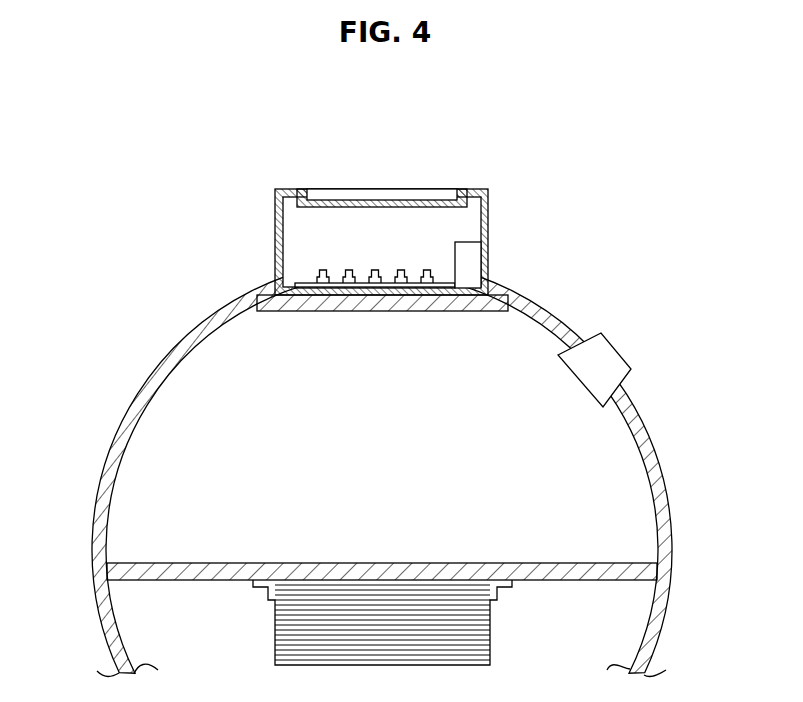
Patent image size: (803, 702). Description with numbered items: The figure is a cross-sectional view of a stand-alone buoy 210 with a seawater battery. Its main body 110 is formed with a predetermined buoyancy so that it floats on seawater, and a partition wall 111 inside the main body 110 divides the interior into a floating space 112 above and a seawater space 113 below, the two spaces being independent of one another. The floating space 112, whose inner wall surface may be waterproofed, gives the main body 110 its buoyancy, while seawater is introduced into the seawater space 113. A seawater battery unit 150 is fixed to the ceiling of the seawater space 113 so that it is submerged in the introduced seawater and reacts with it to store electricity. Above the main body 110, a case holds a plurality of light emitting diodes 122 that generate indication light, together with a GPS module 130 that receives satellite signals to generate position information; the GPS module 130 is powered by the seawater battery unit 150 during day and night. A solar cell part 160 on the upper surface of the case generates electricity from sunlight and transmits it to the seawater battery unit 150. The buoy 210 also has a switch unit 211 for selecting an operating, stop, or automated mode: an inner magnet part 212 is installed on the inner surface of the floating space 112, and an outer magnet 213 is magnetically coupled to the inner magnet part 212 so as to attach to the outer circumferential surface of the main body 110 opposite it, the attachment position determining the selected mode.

The main body 110 is at (188, 347).
The partition wall 111 is at (590, 563).
The floating space 112 is at (200, 492).
The seawater space 113 is at (202, 633).
The light emitting diodes 122 is at (321, 268).
The GPS module 130 is at (468, 260).
The seawater battery unit 150 is at (490, 628).
The solar cell part 160 is at (345, 188).
The stand-alone buoy with a seawater battery 210 is at (532, 160).
The switch unit 211 is at (631, 291).
The inner magnet part 212 is at (592, 372).
The outer magnet 213 is at (622, 352).